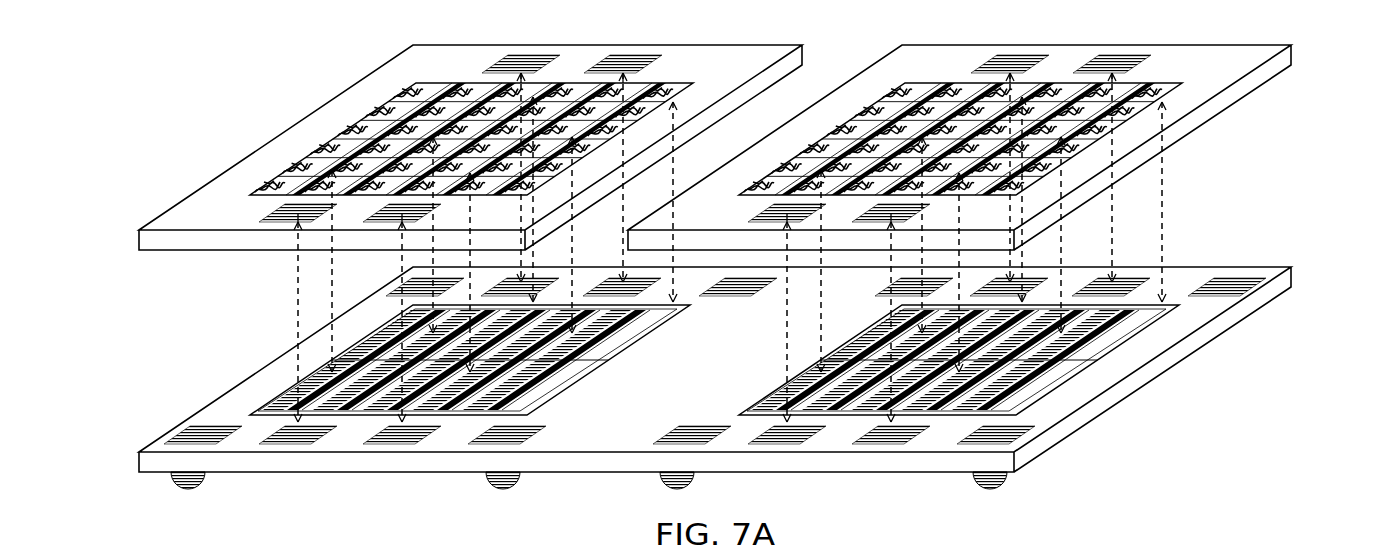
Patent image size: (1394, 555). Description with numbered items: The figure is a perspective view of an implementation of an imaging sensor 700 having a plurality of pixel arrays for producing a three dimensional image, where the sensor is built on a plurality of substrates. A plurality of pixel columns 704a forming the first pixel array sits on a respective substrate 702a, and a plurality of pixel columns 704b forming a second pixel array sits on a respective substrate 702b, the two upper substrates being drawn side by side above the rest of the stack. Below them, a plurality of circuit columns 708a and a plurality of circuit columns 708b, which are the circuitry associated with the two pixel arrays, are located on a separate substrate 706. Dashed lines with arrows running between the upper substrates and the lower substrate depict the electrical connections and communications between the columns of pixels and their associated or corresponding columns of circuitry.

The imaging sensor 700 is at (1222, 186).
The substrate 702a is at (1280, 86).
The substrate 702b is at (322, 132).
The pixel columns 704a is at (1147, 82).
The pixel columns 704b is at (627, 57).
The separate substrate 706 is at (1084, 410).
The circuit columns 708a is at (1157, 314).
The circuit columns 708b is at (282, 394).